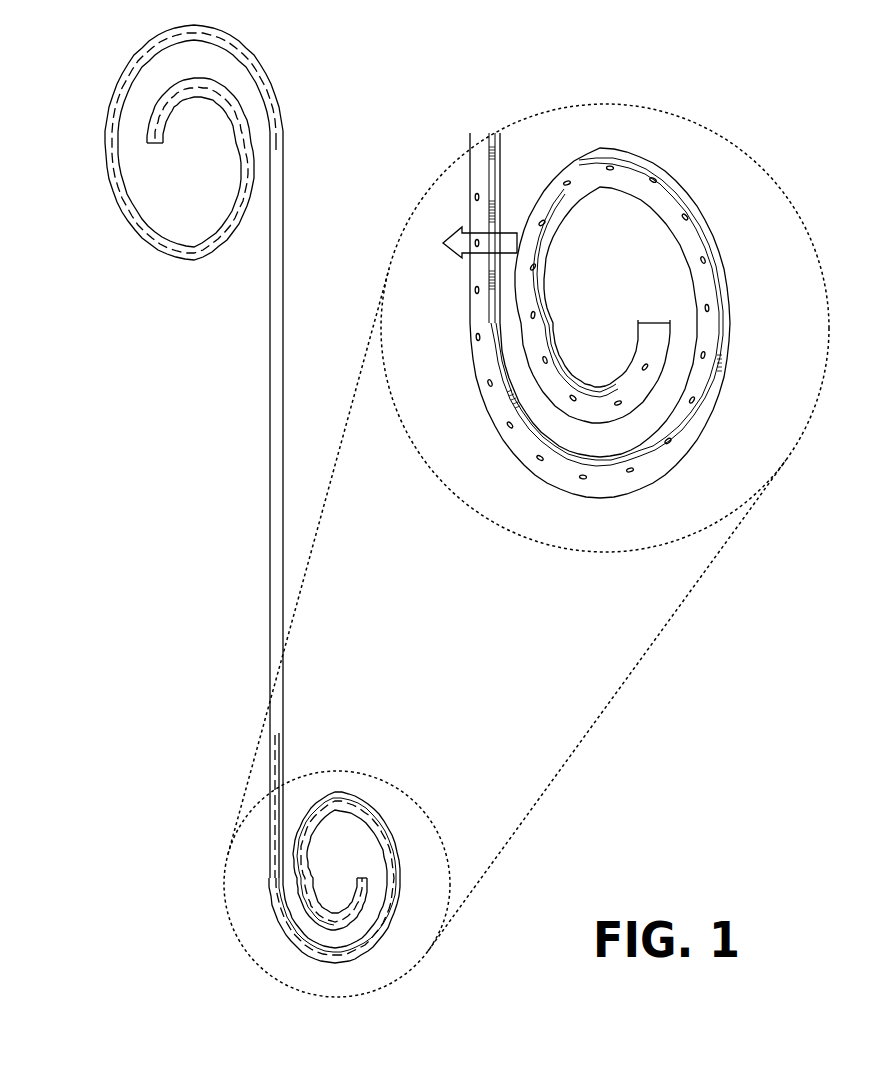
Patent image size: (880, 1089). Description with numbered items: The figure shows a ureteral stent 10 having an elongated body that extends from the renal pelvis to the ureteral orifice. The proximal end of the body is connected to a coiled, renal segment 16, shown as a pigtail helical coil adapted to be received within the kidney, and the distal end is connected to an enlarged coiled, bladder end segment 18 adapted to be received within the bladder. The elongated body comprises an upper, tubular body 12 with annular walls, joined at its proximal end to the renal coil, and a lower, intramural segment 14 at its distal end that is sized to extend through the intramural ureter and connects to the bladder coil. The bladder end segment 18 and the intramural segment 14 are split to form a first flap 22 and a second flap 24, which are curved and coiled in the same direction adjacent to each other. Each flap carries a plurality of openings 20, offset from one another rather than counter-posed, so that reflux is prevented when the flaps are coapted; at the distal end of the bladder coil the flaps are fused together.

The ureteral stent 10 is at (146, 505).
The upper, tubular body 12 is at (268, 555).
The lower, intramural segment 14 is at (285, 755).
The coiled, renal segment 16 is at (110, 197).
The coiled, bladder end segment 18 is at (343, 954).
The openings 20 is at (708, 306).
The first flap 22 is at (498, 190).
The second flap 24 is at (477, 178).